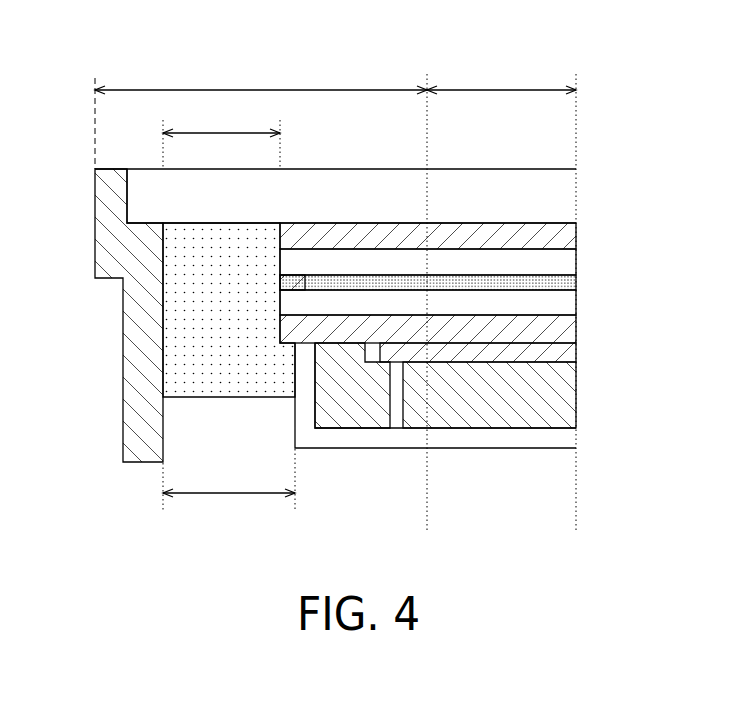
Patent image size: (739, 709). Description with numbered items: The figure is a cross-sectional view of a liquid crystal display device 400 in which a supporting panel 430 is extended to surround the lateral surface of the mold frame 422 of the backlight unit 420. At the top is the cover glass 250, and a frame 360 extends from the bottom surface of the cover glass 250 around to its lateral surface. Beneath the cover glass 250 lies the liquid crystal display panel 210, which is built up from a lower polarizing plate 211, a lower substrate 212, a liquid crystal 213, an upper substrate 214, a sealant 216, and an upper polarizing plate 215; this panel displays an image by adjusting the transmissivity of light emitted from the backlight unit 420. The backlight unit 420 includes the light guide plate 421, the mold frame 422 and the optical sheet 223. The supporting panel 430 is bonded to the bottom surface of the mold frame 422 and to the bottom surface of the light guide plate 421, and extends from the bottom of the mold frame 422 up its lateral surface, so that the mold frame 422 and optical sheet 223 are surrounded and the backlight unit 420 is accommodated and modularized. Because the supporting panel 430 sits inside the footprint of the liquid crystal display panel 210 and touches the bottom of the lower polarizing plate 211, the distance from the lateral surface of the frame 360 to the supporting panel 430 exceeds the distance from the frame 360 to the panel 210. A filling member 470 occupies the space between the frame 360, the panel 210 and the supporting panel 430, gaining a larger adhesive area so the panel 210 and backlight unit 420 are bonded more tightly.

The liquid crystal display device 400 is at (558, 38).
The cover glass 250 is at (566, 185).
The frame 360 is at (138, 258).
The filling member 470 is at (235, 352).
The liquid crystal display panel 210 is at (483, 271).
The lower polarizing plate 211 is at (456, 329).
The lower substrate 212 is at (566, 305).
The liquid crystal 213 is at (566, 280).
The upper substrate 214 is at (566, 259).
The upper polarizing plate 215 is at (566, 237).
The sealant 216 is at (305, 283).
The backlight unit 420 is at (501, 386).
The optical sheet 223 is at (566, 358).
The mold frame 422 is at (382, 387).
The light guide plate 421 is at (566, 421).
The supporting panel 430 is at (565, 435).